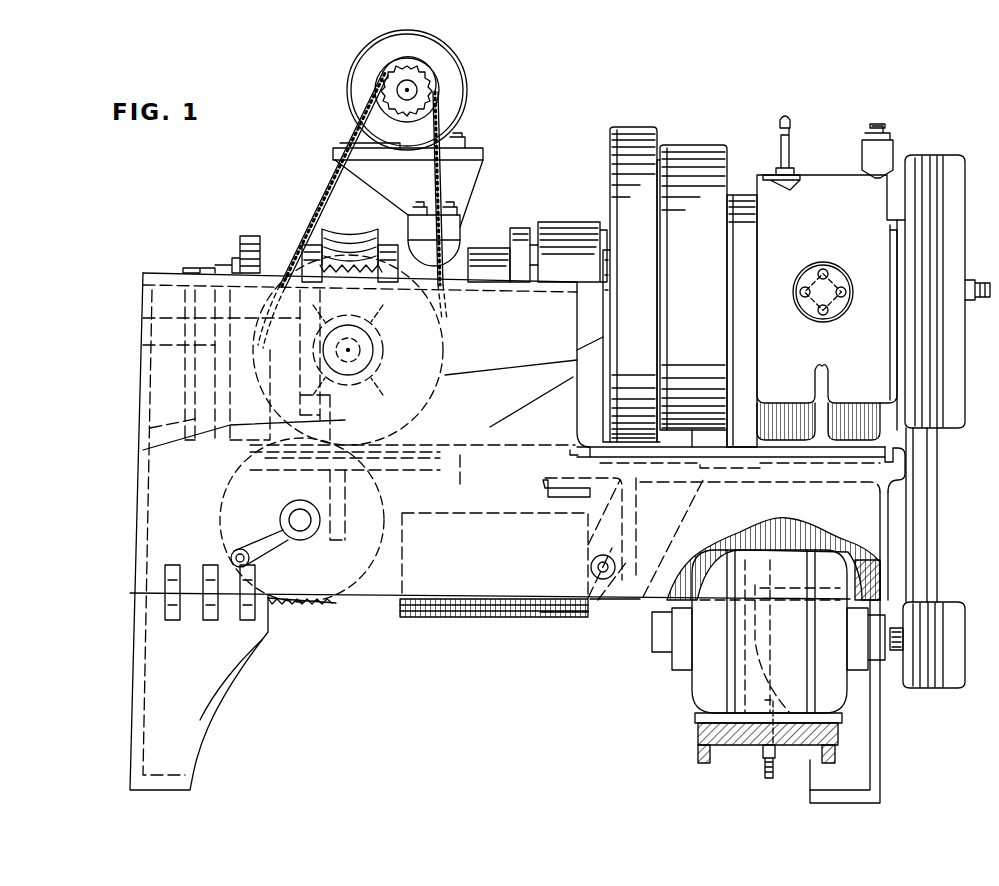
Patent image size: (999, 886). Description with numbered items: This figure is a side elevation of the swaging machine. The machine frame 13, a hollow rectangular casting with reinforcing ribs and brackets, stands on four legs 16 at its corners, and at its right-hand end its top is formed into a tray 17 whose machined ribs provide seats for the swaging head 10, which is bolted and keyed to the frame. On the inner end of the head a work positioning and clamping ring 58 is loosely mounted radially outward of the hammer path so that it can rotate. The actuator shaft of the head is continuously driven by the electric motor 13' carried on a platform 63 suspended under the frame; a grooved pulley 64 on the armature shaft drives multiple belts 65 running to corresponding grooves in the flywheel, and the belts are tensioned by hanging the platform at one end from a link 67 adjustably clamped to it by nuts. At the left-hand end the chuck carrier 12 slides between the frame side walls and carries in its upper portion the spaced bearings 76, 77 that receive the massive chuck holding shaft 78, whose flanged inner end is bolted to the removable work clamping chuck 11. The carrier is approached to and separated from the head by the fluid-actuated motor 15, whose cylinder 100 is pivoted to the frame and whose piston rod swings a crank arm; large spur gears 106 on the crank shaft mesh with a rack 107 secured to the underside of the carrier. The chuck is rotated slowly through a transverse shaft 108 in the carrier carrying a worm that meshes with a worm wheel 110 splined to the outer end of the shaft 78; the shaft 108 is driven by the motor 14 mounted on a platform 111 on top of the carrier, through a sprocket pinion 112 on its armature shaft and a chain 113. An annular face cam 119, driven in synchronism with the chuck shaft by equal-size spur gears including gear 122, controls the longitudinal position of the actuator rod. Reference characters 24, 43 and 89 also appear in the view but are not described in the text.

The swaging head 10 is at (790, 200).
The work clamping chuck 11 is at (712, 150).
The chuck carrier 12 is at (150, 428).
The machine frame 13 is at (475, 531).
The motor for driving the swaging actuator 13' is at (767, 615).
The motor for rotating the chuck 14 is at (468, 88).
The fluid-actuated motor 15 is at (535, 617).
The legs 16 is at (210, 713).
The tray 17 is at (905, 452).
The driven pulley 24 is at (950, 352).
The frame member 43 is at (610, 604).
The work positioning and clamping ring 58 is at (740, 200).
The motor platform 63 is at (745, 745).
The grooved pulley 64 is at (945, 673).
The multiple belts 65 is at (937, 505).
The link 67 is at (772, 765).
The bearing 76 is at (452, 240).
The bearing 77 is at (557, 222).
The chuck holding shaft 78 is at (500, 248).
The drum 89 is at (610, 142).
The cylinder 100 is at (410, 617).
The spur gears 106 is at (308, 606).
The rack 107 is at (440, 452).
The transverse shaft 108 is at (362, 350).
The worm wheel 110 is at (340, 234).
The platform 111 is at (470, 152).
The sprocket pinion 112 is at (398, 82).
The chain 113 is at (323, 193).
The annular face cam 119 is at (185, 268).
The spur gear 122 is at (250, 236).